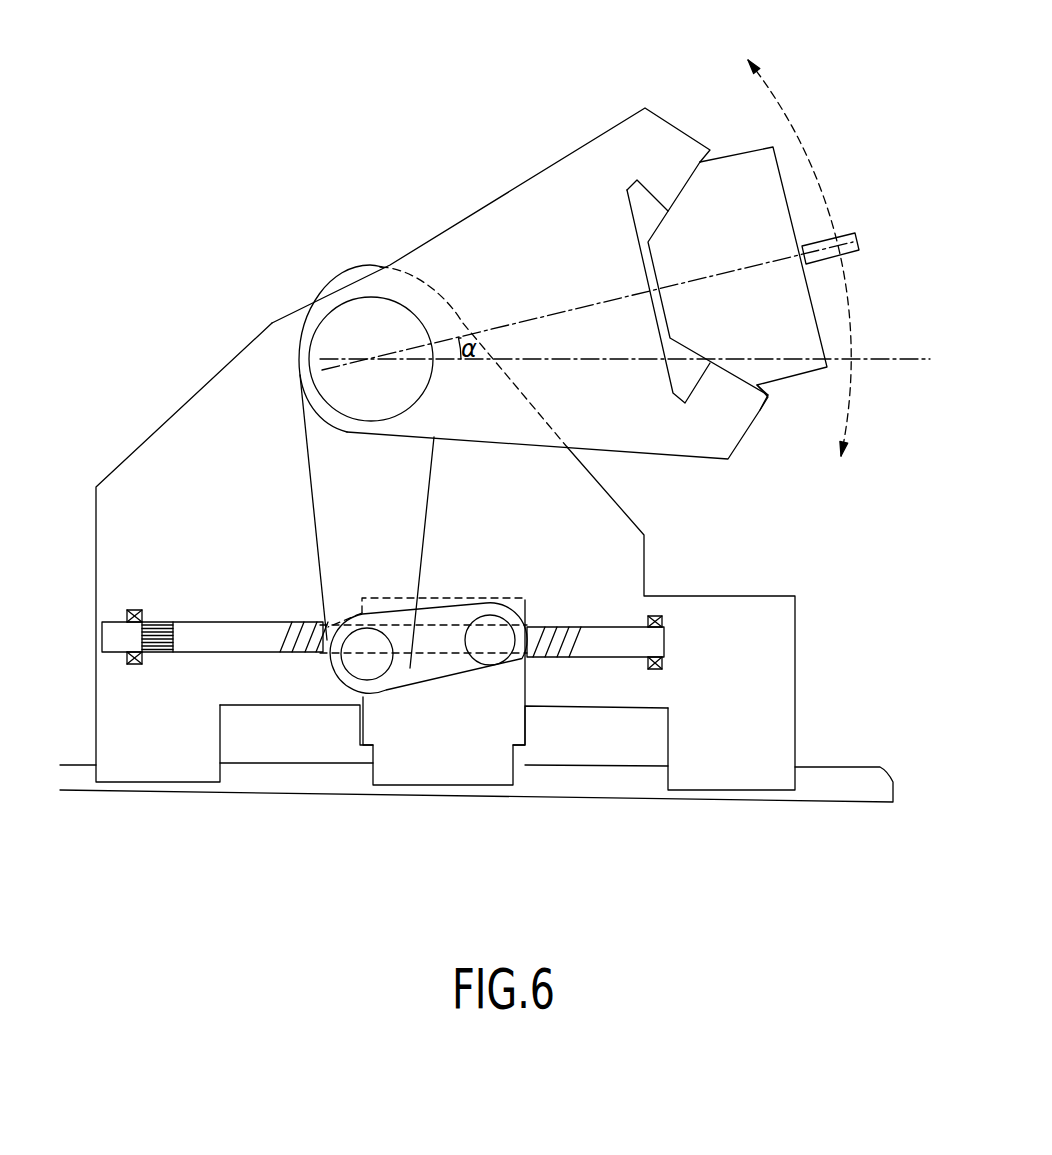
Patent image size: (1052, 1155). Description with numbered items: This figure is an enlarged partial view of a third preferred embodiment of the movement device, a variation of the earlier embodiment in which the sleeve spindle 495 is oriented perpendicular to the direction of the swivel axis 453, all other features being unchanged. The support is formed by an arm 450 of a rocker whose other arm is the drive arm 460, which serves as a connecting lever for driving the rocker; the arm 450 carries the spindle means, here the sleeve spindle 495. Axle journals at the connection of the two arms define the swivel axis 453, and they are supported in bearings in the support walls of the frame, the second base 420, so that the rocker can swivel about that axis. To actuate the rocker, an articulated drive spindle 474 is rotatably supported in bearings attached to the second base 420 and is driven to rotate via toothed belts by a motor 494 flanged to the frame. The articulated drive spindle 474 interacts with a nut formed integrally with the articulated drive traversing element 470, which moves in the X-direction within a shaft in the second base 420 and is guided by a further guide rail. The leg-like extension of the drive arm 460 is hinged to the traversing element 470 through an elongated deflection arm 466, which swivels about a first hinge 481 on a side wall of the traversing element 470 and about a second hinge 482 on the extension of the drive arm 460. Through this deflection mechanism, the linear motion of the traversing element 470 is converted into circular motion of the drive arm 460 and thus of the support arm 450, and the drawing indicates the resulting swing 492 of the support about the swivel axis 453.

The second base 420 is at (170, 457).
The arm 450 is at (493, 250).
The swivel axis 453 is at (372, 358).
The drive arm 460 is at (338, 500).
The deflection arm 466 is at (427, 672).
The articulated drive traversing element 470 is at (472, 757).
The articulated drive spindle 474 is at (215, 640).
The first hinge 481 is at (497, 640).
The second hinge 482 is at (367, 657).
The swing arc 492 is at (792, 118).
The motor 494 is at (738, 168).
The sleeve spindle 495 is at (847, 237).